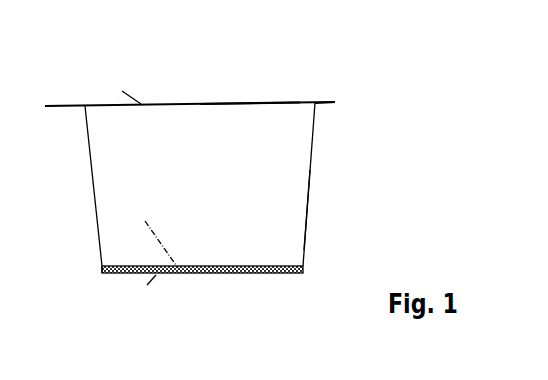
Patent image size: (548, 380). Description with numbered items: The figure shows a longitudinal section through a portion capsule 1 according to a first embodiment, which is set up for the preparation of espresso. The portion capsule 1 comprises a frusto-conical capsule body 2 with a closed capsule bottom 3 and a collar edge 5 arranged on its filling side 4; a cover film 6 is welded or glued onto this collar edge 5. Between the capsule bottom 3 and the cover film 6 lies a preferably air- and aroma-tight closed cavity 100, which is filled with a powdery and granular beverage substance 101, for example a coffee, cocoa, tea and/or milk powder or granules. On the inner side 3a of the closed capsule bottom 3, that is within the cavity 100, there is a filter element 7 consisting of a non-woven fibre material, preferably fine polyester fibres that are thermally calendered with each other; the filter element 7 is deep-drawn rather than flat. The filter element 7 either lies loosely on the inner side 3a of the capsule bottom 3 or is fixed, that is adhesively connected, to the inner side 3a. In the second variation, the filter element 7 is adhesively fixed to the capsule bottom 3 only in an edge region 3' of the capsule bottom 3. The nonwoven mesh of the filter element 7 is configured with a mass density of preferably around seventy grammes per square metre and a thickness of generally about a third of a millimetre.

The portion capsule 1 is at (178, 88).
The capsule body 2 is at (312, 162).
The capsule bottom 3 is at (201, 292).
The edge region 3' is at (86, 315).
The inner side 3a is at (145, 221).
The filling side 4 is at (253, 90).
The collar edge 5 is at (335, 102).
The cover film 6 is at (142, 104).
The filter element 7 is at (252, 269).
The cavity 100 is at (347, 210).
The beverage substance 101 is at (260, 200).